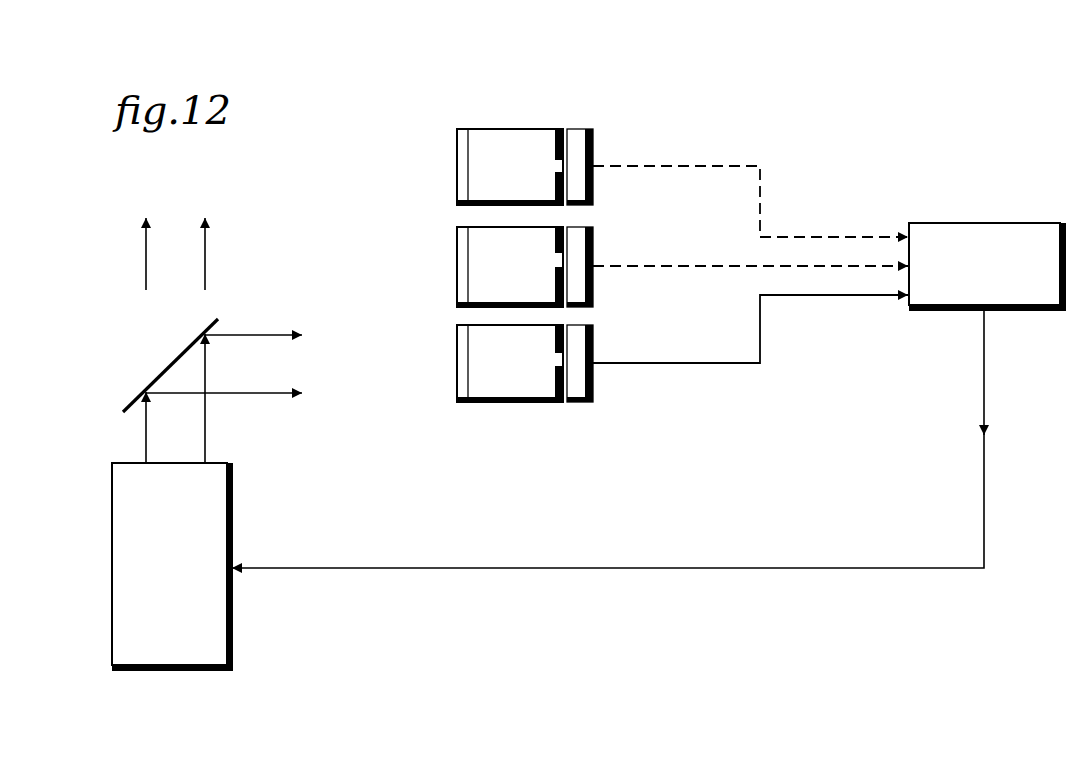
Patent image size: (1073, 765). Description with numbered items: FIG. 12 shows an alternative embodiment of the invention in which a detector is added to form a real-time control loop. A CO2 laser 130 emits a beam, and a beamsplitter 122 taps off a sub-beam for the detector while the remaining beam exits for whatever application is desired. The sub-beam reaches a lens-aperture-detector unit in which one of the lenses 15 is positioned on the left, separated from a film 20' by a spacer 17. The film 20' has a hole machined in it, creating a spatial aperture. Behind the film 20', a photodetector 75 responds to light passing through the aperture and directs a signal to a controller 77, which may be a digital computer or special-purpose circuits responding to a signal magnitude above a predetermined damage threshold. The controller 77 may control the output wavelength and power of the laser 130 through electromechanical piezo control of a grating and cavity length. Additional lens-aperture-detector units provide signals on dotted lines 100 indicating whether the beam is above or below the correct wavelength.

The lens 15 is at (462, 404).
The spacer 17 is at (497, 386).
The film 20' is at (562, 410).
The photodetector 75 is at (580, 383).
The controller 77 is at (982, 223).
The dotted lines 100 is at (757, 192).
The beamsplitter 122 is at (178, 357).
The CO2 laser 130 is at (150, 598).